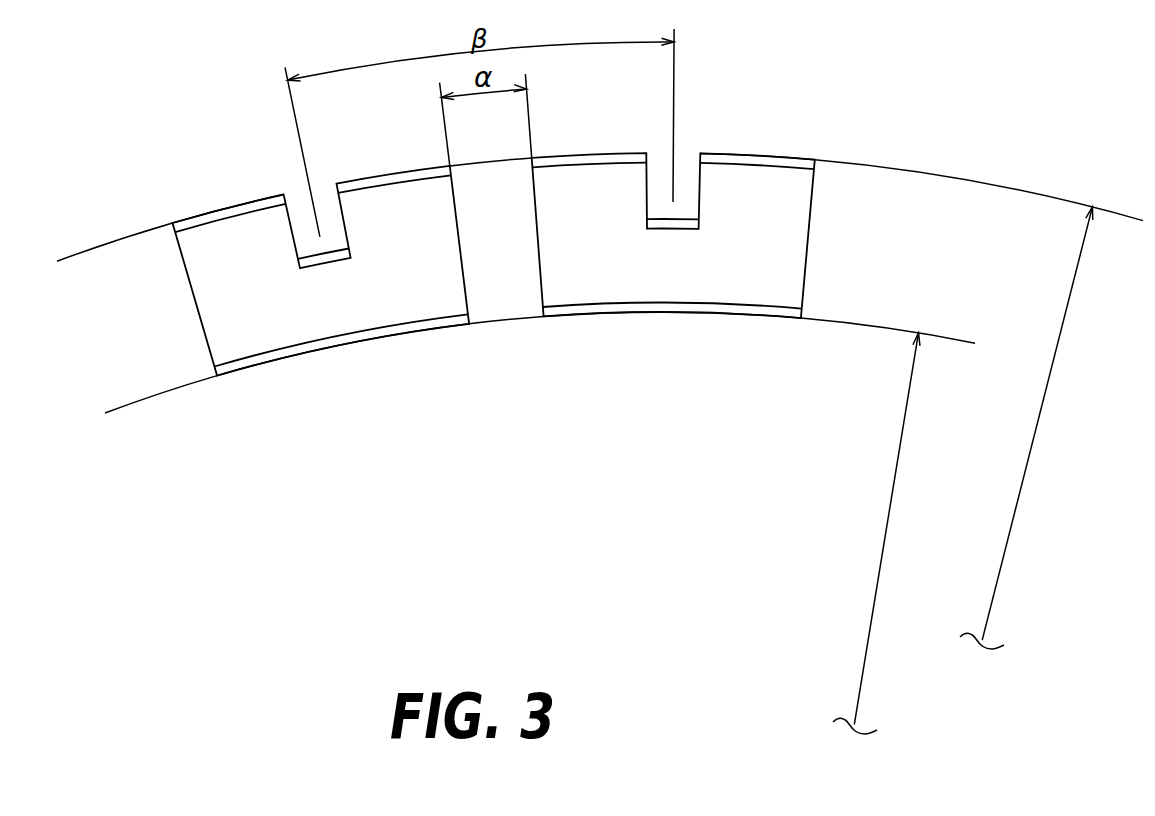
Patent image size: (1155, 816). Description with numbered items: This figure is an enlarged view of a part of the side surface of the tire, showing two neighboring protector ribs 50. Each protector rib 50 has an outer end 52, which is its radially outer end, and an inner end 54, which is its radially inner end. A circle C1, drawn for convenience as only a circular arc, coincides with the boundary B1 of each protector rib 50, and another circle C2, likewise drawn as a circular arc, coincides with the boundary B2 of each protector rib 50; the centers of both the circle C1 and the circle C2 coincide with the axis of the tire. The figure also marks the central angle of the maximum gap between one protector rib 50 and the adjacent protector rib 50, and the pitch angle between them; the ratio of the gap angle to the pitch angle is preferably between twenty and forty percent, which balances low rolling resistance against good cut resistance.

The protector rib 50 is at (335, 313).
The outer end 52 is at (380, 183).
The inner end 54 is at (407, 330).
The boundary B1 is at (220, 212).
The boundary B2 is at (283, 360).
The circle C1 is at (882, 163).
The circle C2 is at (862, 320).